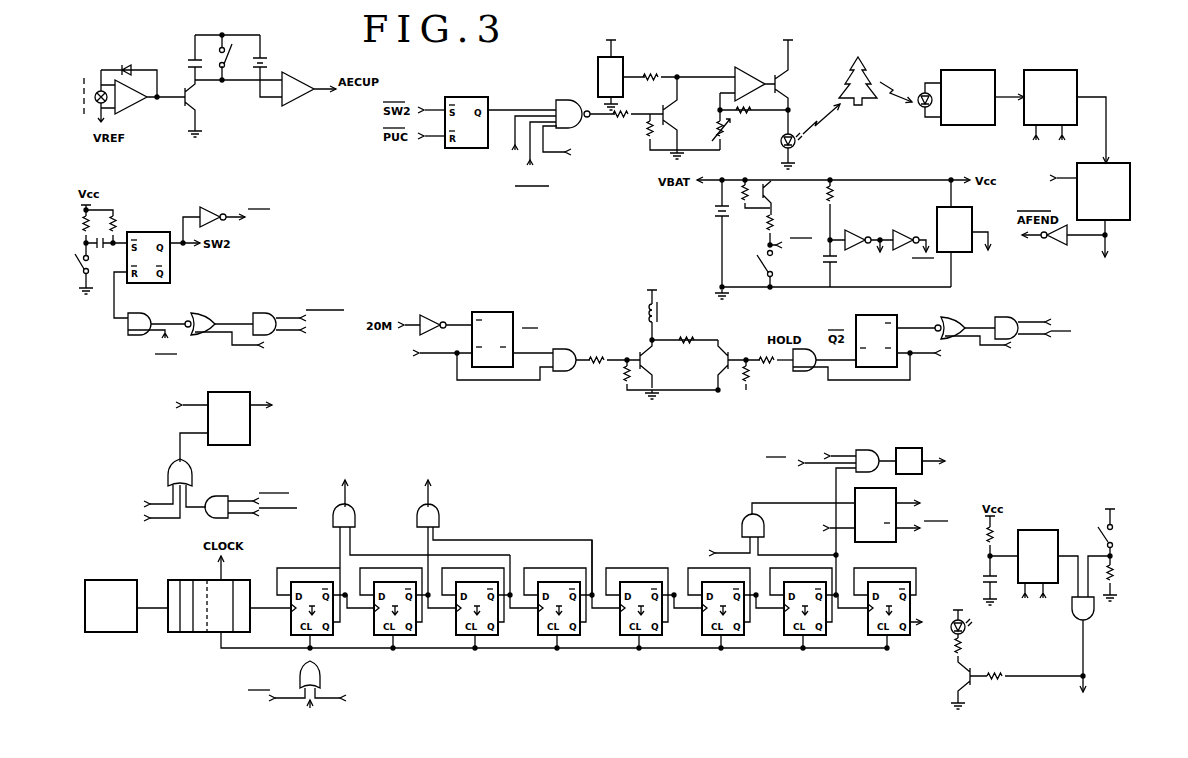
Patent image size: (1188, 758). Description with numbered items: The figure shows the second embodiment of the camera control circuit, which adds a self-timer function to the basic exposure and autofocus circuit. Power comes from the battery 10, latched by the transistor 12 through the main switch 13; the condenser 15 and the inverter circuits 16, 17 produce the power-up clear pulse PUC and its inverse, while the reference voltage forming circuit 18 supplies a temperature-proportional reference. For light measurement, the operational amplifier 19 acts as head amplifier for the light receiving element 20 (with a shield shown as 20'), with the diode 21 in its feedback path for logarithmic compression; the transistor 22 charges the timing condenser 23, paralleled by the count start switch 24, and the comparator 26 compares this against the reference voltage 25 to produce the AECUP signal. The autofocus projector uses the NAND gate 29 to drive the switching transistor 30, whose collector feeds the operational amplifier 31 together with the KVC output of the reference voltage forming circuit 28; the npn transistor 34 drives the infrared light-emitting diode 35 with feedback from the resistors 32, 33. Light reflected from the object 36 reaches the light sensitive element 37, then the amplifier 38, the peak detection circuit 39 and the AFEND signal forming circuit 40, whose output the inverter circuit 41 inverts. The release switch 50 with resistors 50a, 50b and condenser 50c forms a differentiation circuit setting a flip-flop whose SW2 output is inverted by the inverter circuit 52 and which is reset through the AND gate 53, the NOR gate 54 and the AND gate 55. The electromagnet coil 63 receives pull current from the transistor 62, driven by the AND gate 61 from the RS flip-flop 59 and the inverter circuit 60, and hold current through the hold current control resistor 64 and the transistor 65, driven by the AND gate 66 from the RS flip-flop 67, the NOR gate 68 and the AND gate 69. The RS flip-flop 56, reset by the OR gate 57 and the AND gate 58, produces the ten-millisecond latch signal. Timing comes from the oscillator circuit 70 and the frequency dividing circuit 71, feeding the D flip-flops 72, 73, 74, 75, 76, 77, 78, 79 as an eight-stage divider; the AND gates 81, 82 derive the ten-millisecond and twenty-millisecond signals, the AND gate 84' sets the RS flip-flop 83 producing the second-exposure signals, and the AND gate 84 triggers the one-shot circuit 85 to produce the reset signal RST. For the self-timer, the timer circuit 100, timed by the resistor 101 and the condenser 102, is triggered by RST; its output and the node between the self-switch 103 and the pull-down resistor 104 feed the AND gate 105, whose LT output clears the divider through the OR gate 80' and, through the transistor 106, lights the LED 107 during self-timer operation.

The battery 10 is at (712, 213).
The transistor 12 is at (778, 191).
The main switch 13 is at (778, 264).
The condenser 15 is at (836, 262).
The inverter circuit 16 is at (858, 230).
The inverter circuit 17 is at (904, 232).
The reference voltage forming circuit 18 is at (937, 222).
The operational amplifier 19 is at (140, 105).
The light receiving element 20 is at (95, 81).
The light shield 20' is at (72, 112).
The diode 21 is at (127, 67).
The transistor for elongation 22 is at (198, 105).
The timing condenser 23 is at (190, 63).
The count start switch 24 is at (227, 65).
The reference voltage 25 is at (268, 61).
The comparator 26 is at (305, 102).
The reference voltage forming circuit 28 is at (598, 65).
The NAND gate 29 is at (566, 100).
The switching transistor 30 is at (679, 118).
The operational amplifier 31 is at (748, 68).
The resistor 32 is at (728, 135).
The resistor 33 is at (752, 115).
The npn transistor 34 is at (792, 72).
The infrared light-emitting diode 35 is at (797, 148).
The object 36 is at (873, 72).
The light sensitive element 37 is at (921, 110).
The amplifier 38 is at (956, 70).
The peak detection circuit 39 is at (1038, 70).
The AFEND signal forming circuit 40 is at (1077, 205).
The inverter circuit 41 is at (1054, 245).
The release switch 50 is at (80, 258).
The resistor 50a is at (82, 225).
The resistor 50b is at (117, 222).
The condenser 50c is at (99, 250).
The inverter circuit 52 is at (218, 207).
The AND gate 53 is at (148, 313).
The NOR gate 54 is at (201, 313).
The AND gate 55 is at (262, 313).
The RS flip-flop 56 is at (252, 434).
The OR gate 57 is at (171, 464).
The AND gate 58 is at (214, 496).
The RS flip-flop 59 is at (500, 312).
The inverter circuit 60 is at (430, 315).
The AND gate 61 is at (566, 372).
The transistor 62 is at (648, 360).
The coil 63 is at (660, 311).
The hold current control resistor 64 is at (692, 336).
The transistor 65 is at (729, 350).
The AND gate 66 is at (805, 371).
The RS flip-flop 67 is at (890, 315).
The NOR gate 68 is at (955, 317).
The AND gate 69 is at (1010, 317).
The oscillator circuit 70 is at (112, 632).
The frequency dividing circuit 71 is at (198, 632).
The D flip-flop 72 is at (299, 635).
The D flip-flop 73 is at (396, 635).
The D flip-flop 74 is at (470, 635).
The D flip-flop 75 is at (552, 635).
The D flip-flop 76 is at (634, 635).
The D flip-flop 77 is at (715, 635).
The D flip-flop 78 is at (798, 635).
The D flip-flop 79 is at (882, 635).
The OR gate 80' is at (309, 693).
The AND gate 81 is at (357, 518).
The AND gate 82 is at (441, 518).
The RS flip-flop 83 is at (885, 542).
The AND gate 84 is at (826, 504).
The AND gate 84' is at (769, 528).
The one-shot circuit 85 is at (909, 448).
The timer circuit 100 is at (1045, 530).
The resistor 101 is at (995, 534).
The condenser 102 is at (985, 578).
The self-switch 103 is at (1103, 535).
The pull-down resistor 104 is at (1116, 586).
The AND gate 105 is at (1078, 622).
The transistor 106 is at (968, 676).
The LED 107 is at (966, 630).